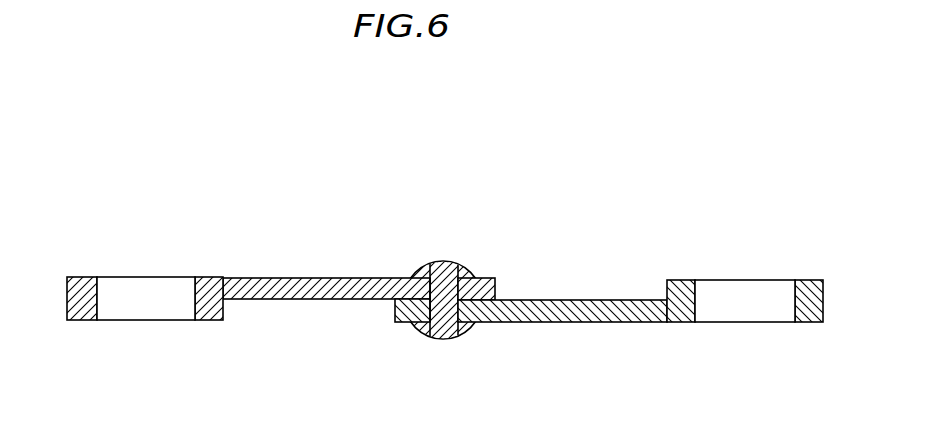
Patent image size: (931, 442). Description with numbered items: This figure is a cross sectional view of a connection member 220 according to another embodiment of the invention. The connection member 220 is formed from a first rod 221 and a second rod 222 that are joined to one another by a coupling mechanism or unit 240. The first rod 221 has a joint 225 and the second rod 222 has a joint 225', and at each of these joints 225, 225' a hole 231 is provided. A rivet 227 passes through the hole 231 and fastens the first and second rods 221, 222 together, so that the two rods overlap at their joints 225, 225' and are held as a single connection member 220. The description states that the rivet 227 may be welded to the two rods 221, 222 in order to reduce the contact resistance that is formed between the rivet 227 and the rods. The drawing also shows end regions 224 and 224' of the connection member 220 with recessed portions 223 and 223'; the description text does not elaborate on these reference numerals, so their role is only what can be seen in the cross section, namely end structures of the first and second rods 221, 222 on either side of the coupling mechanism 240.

The connection member 220 is at (203, 162).
The first rod 221 is at (297, 280).
The second rod 222 is at (570, 312).
The first recess 223 is at (146, 325).
The second recess 223' is at (745, 329).
The first frame portion 224 is at (140, 300).
The second frame portion 224' is at (747, 304).
The joint 225 is at (508, 275).
The joint 225' is at (376, 336).
The rivet 227 is at (443, 262).
The hole 231 is at (416, 304).
The coupling mechanism 240 is at (457, 349).